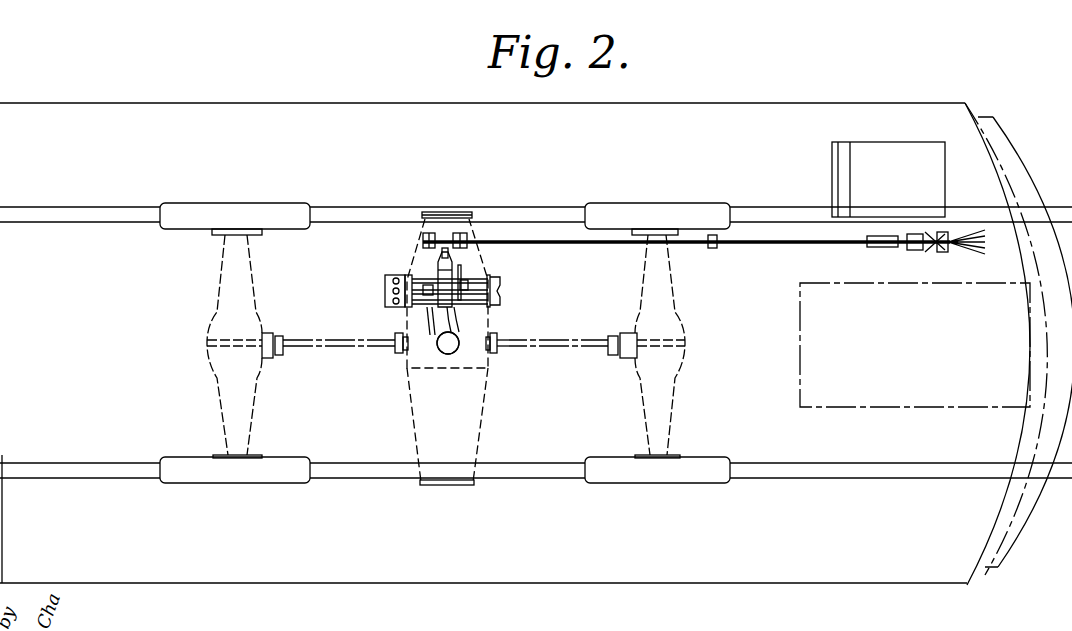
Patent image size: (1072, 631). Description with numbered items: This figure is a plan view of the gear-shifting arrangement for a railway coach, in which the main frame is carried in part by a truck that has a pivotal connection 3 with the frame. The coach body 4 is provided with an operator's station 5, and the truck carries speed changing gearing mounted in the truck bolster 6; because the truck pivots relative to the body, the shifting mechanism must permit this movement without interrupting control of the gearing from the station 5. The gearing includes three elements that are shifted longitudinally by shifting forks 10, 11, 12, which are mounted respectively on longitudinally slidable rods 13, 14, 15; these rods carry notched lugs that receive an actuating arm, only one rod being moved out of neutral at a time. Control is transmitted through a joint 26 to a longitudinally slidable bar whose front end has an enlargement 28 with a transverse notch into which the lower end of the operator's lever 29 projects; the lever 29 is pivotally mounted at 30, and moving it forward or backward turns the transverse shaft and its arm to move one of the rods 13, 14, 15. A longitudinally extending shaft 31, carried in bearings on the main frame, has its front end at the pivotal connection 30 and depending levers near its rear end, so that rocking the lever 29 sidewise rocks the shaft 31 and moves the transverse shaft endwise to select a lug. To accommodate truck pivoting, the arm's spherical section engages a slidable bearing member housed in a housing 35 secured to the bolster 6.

The pivotal connection 3 is at (448, 355).
The coach body 4 is at (1012, 170).
The operator's station 5 is at (888, 179).
The truck bolster 6 is at (488, 368).
The shifting fork 10 is at (465, 268).
The shifting fork 11 is at (478, 326).
The shifting fork 12 is at (438, 348).
The longitudinally slidable rod 13 is at (415, 280).
The longitudinally slidable rod 14 is at (415, 305).
The longitudinally slidable rod 15 is at (397, 292).
The joint 26 is at (893, 248).
The enlargement 28 is at (915, 251).
The operator's lever 29 is at (985, 242).
The pivotal connection 30 is at (941, 252).
The longitudinally extending shaft 31 is at (542, 247).
The housing 35 is at (440, 272).